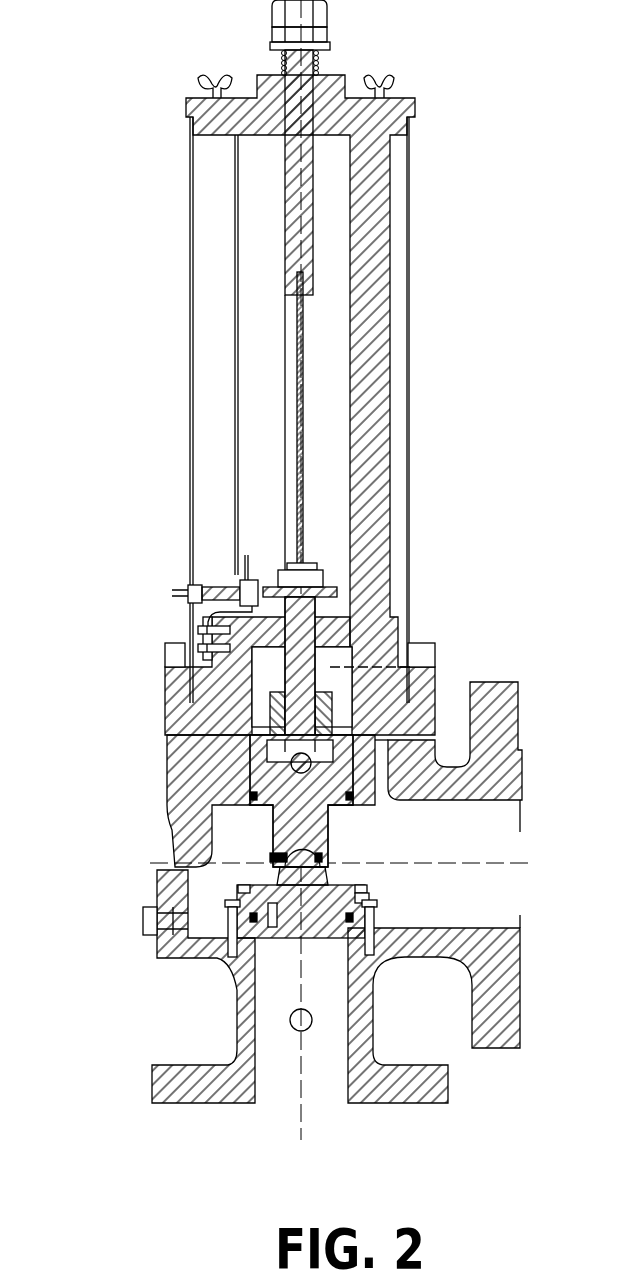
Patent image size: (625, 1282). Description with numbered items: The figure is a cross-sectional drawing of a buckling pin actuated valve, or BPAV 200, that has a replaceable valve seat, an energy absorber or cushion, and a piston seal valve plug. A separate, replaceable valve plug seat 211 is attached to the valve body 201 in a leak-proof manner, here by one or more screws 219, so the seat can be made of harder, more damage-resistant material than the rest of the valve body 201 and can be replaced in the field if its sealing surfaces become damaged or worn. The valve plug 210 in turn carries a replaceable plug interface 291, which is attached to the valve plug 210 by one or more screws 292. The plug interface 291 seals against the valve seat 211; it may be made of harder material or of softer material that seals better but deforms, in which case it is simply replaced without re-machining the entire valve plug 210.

The BPAV 200 is at (105, 520).
The valve body 201 is at (180, 772).
The valve plug 210 is at (233, 880).
The replaceable valve plug seat 211 is at (373, 902).
The screws 219 is at (378, 930).
The replaceable plug interface 291 is at (180, 921).
The screws 292 is at (245, 933).